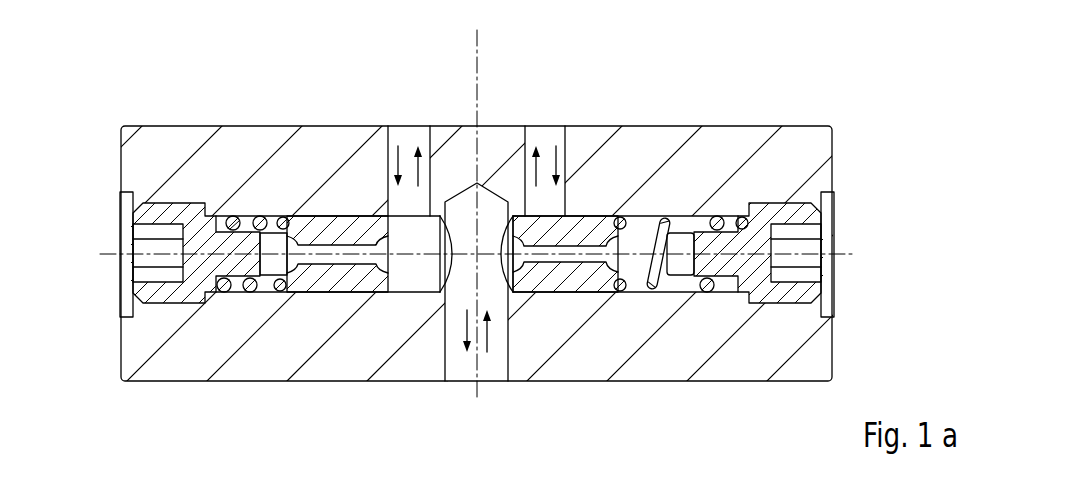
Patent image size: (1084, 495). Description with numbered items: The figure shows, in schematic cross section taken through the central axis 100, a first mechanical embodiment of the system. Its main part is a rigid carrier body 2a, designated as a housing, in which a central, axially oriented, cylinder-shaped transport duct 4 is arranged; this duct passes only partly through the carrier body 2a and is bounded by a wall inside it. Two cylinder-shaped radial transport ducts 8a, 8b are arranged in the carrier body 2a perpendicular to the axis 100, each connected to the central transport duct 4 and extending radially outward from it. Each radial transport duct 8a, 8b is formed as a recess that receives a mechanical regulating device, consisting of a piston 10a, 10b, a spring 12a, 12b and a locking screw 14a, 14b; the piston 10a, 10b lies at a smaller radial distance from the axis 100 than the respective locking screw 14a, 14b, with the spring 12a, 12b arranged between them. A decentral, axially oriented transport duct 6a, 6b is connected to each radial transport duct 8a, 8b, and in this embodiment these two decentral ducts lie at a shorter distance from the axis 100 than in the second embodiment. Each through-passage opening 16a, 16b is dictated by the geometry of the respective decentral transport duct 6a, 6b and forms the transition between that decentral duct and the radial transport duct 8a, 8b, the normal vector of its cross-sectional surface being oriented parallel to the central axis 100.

The central axis 100 is at (478, 95).
The carrier body 2a is at (691, 126).
The central transport duct 4 is at (491, 362).
The decentral axial transport duct 6a is at (404, 125).
The decentral axial transport duct 6b is at (541, 125).
The radial transport duct 8a is at (273, 296).
The radial transport duct 8b is at (675, 284).
The piston 10a is at (345, 294).
The piston 10b is at (587, 294).
The spring 12a is at (233, 215).
The spring 12b is at (716, 215).
The locking screw 14a is at (128, 221).
The locking screw 14b is at (836, 214).
The through-passage opening 16a is at (404, 224).
The through-passage opening 16b is at (586, 215).